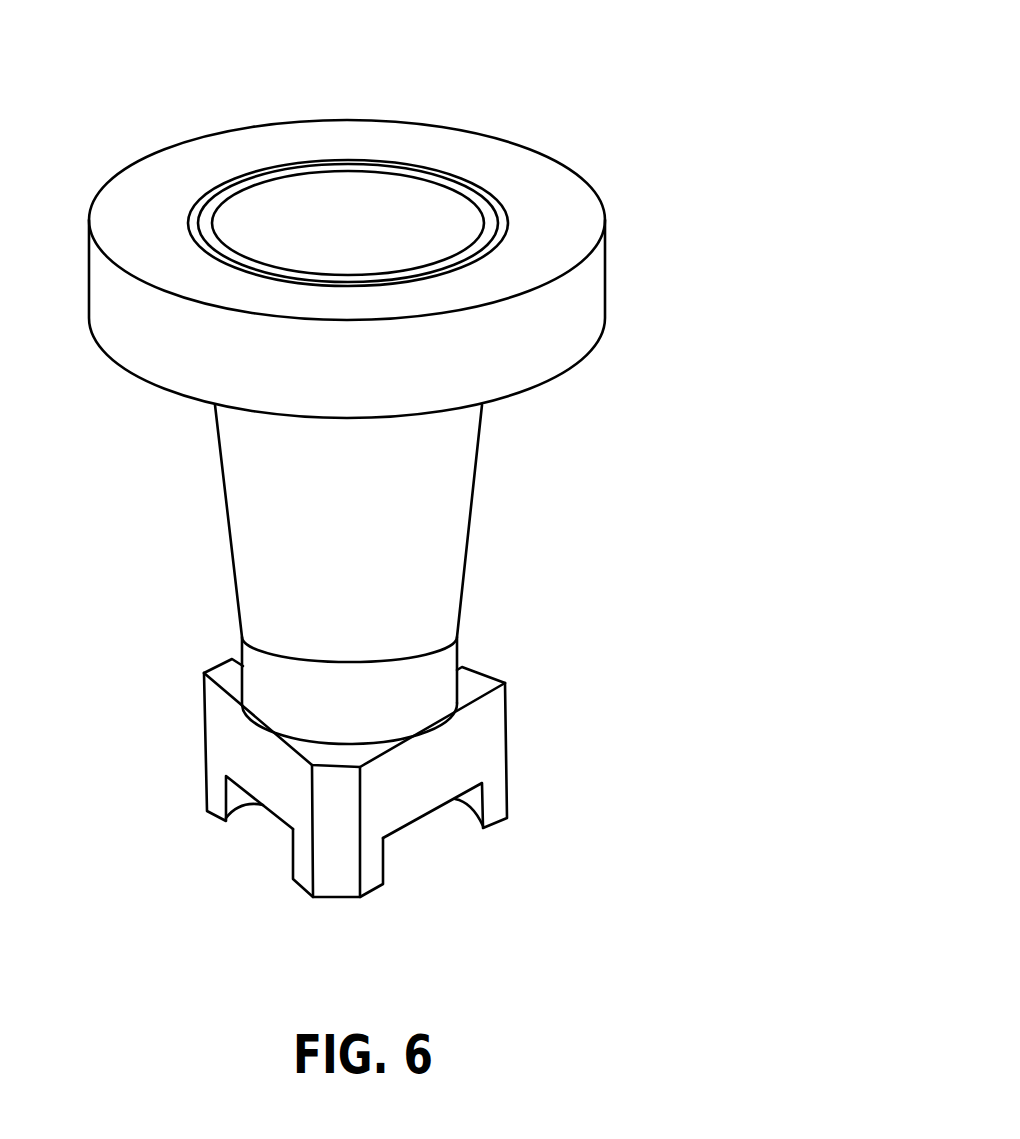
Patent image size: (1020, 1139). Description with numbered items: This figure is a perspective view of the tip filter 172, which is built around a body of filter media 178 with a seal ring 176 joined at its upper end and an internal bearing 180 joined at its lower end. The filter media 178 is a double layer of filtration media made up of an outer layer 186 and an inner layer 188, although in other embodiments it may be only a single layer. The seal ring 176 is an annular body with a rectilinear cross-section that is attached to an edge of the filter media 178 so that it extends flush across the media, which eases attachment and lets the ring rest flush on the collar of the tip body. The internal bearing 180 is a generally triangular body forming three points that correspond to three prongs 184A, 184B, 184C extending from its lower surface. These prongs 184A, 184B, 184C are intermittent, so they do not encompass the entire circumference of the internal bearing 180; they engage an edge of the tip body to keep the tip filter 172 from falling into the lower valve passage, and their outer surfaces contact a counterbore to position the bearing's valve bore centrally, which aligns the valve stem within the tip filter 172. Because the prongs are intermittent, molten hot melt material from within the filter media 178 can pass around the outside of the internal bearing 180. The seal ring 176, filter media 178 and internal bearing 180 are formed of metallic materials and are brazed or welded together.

The tip filter 172 is at (555, 122).
The seal ring 176 is at (555, 222).
The filter media 178 is at (466, 540).
The internal bearing 180 is at (500, 723).
The prong 184A is at (217, 795).
The prong 184B is at (502, 805).
The prong 184C is at (347, 885).
The outer layer 186 is at (497, 210).
The inner layer 188 is at (247, 227).